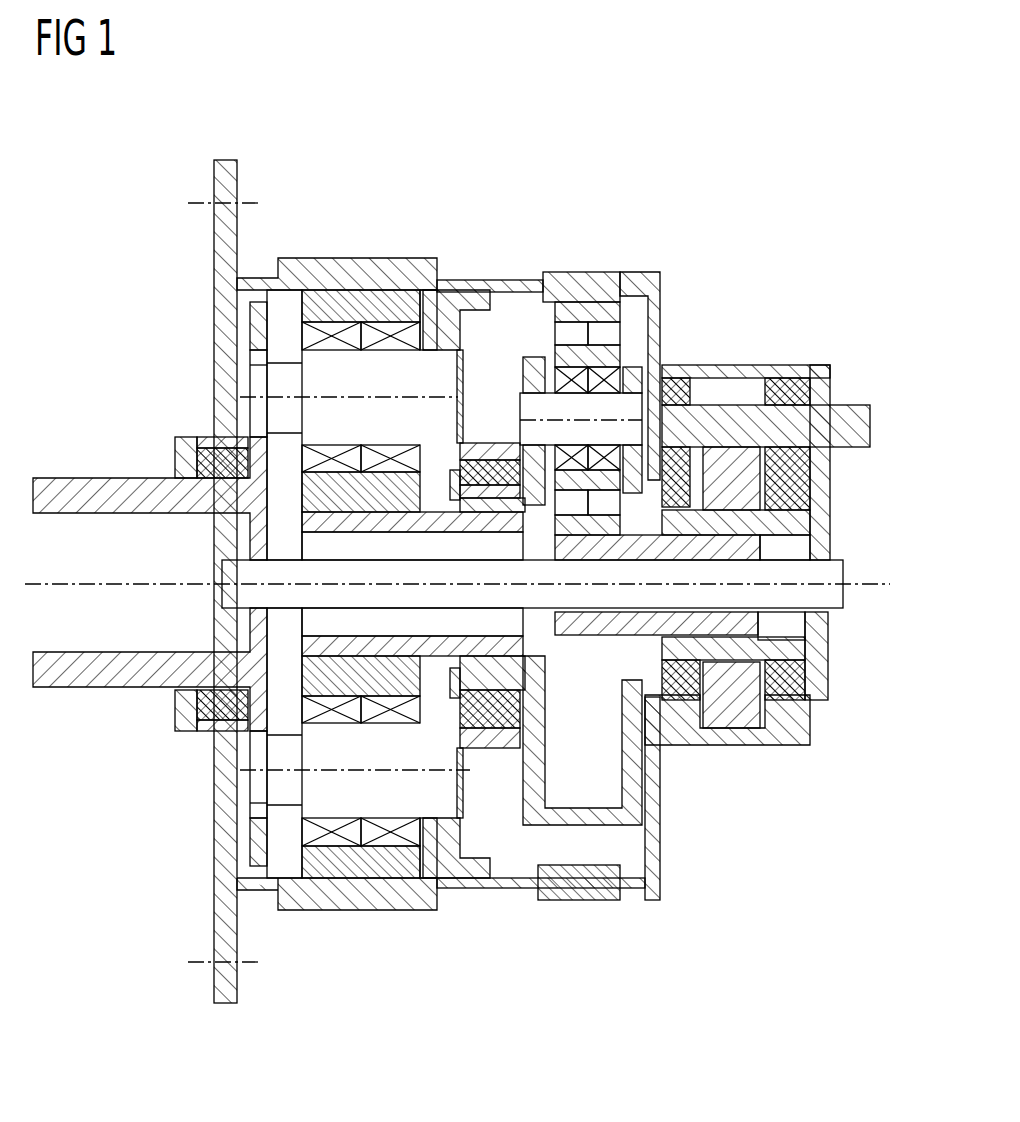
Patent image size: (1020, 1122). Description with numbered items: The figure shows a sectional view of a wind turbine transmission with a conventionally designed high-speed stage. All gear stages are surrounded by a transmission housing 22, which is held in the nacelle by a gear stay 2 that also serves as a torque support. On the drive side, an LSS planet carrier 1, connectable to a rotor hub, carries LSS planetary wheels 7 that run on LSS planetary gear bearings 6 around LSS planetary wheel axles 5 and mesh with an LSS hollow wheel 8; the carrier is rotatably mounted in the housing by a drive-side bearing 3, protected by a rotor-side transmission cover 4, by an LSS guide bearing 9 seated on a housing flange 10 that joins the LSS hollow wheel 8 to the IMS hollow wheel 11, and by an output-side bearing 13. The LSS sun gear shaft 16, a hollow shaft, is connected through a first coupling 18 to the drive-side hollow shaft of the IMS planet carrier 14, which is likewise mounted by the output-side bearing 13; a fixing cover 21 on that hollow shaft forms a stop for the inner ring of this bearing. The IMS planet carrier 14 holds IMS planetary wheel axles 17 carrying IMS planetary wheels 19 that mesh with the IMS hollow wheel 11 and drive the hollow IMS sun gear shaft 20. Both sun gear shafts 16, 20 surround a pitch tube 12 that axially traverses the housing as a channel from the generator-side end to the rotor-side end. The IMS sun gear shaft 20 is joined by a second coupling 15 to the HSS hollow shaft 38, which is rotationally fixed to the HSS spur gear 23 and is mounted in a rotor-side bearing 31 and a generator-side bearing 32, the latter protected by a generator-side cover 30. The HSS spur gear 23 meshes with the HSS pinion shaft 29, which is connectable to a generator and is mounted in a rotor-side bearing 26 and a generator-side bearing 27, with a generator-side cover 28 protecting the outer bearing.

The LSS planet carrier 1 is at (65, 478).
The gear stay 2 is at (214, 252).
The drive-side bearing 3 is at (186, 460).
The rotor-side transmission cover 4 is at (176, 446).
The LSS planetary wheel axle 5 is at (266, 380).
The LSS planetary gear bearing 6 is at (250, 336).
The LSS planetary wheel 7 is at (360, 300).
The LSS hollow wheel 8 is at (328, 268).
The LSS guide bearing 9 is at (462, 292).
The housing flange 10 is at (506, 280).
The IMS hollow wheel 11 is at (582, 275).
The pitch tube 12 is at (845, 597).
The output-side bearing 13 is at (470, 446).
The IMS planet carrier 14 is at (658, 818).
The second coupling 15 is at (732, 450).
The LSS sun gear shaft 16 is at (250, 640).
The IMS planetary wheel axle 17 is at (532, 380).
The first coupling 18 is at (505, 498).
The IMS planetary wheel 19 is at (580, 630).
The IMS sun gear shaft 20 is at (748, 550).
The fixing cover 21 is at (457, 662).
The transmission housing 22 is at (632, 900).
The HSS spur gear 23 is at (730, 730).
The rotor-side bearing 26 is at (680, 380).
The generator-side bearing 27 is at (795, 377).
The generator-side cover 28 is at (832, 374).
The HSS pinion shaft 29 is at (870, 420).
The generator-side cover 30 is at (828, 702).
The rotor-side bearing 31 is at (682, 702).
The generator-side bearing 32 is at (815, 683).
The HSS hollow shaft 38 is at (814, 658).